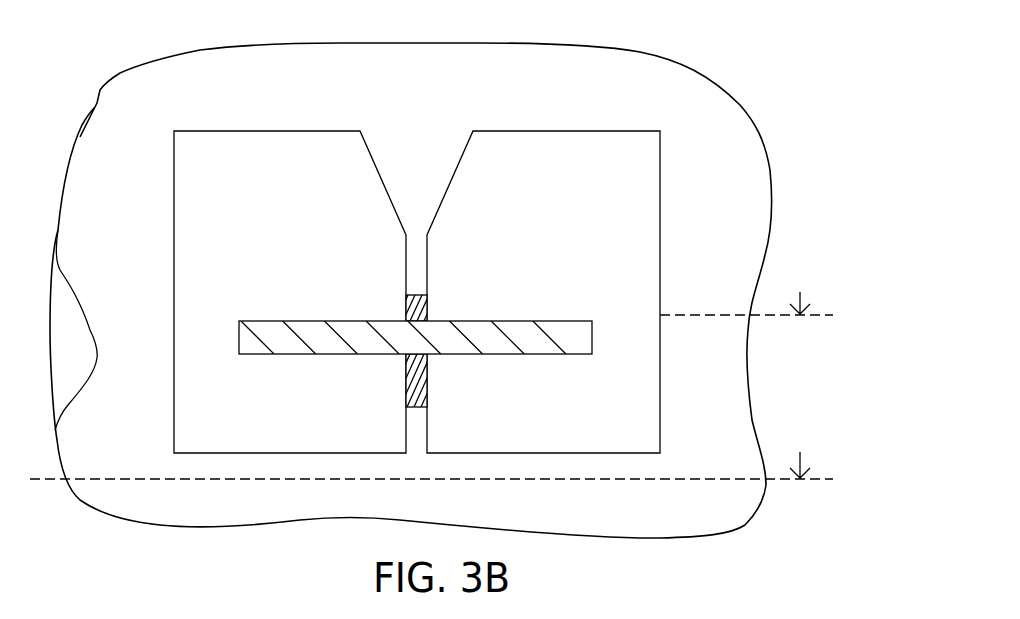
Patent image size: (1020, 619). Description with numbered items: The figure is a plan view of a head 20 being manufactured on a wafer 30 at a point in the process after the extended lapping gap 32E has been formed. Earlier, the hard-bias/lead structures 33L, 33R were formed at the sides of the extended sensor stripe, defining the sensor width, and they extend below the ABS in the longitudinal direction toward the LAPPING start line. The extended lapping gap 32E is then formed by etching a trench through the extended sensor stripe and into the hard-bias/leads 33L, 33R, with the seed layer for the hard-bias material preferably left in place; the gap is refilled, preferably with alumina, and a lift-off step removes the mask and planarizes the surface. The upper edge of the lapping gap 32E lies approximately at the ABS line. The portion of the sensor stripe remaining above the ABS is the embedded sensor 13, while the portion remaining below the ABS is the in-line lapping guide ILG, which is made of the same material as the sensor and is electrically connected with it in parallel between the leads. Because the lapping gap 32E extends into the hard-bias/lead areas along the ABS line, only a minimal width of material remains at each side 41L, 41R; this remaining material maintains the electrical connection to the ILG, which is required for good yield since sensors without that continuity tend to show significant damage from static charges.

The wafer 30 is at (768, 110).
The head 20 is at (686, 158).
The left hard-bias/lead structure 33L is at (192, 187).
The right hard-bias/lead structure 33R is at (518, 140).
The left side of remaining material 41L is at (210, 335).
The right side of remaining material 41R is at (627, 330).
The embedded sensor 13 is at (407, 312).
The in-line lapping guide ILG is at (420, 378).
The extended lapping gap 32E is at (515, 333).
The air bearing surface line ABS is at (750, 288).
The lapping start line LAPPING is at (468, 430).